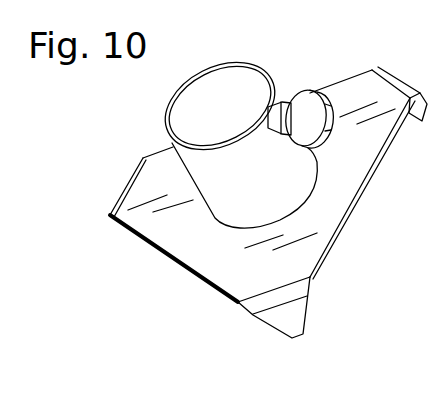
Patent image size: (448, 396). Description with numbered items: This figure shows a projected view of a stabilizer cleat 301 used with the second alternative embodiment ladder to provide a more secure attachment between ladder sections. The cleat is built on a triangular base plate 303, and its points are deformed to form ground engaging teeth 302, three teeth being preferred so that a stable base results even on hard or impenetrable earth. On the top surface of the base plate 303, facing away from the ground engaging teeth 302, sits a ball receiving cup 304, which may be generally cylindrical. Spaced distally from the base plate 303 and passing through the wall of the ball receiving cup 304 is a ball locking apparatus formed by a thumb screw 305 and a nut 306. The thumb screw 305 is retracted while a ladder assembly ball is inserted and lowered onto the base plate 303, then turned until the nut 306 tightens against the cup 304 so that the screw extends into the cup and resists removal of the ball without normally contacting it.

The stabilizer cleat 301 is at (247, 187).
The ground engaging teeth 302 is at (298, 314).
The triangular base plate 303 is at (315, 205).
The ball receiving cup 304 is at (257, 68).
The thumb screw 305 is at (309, 94).
The nut 306 is at (284, 101).